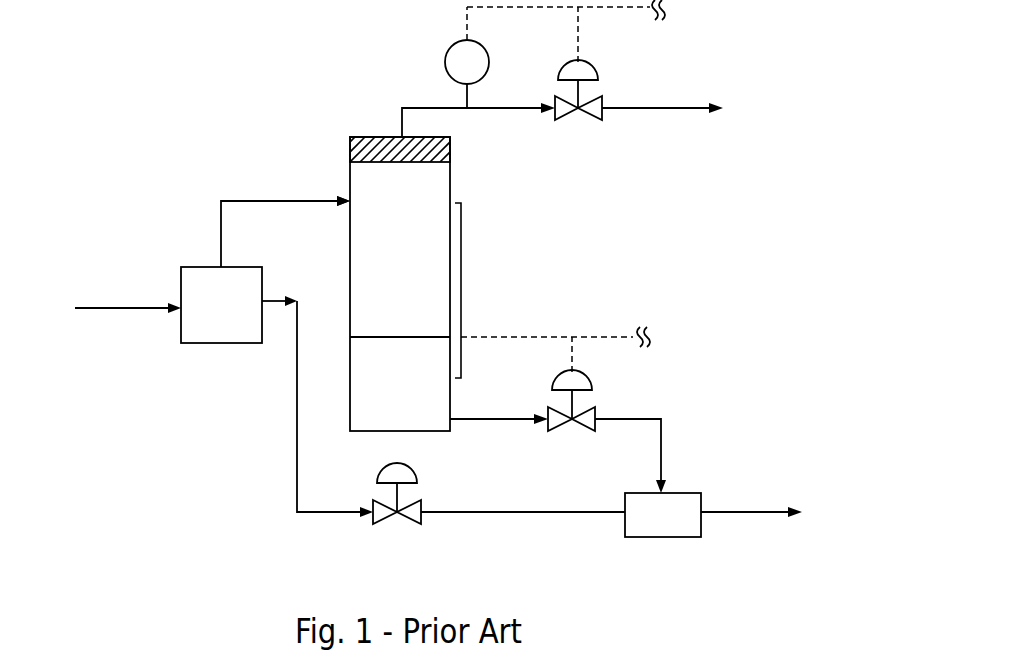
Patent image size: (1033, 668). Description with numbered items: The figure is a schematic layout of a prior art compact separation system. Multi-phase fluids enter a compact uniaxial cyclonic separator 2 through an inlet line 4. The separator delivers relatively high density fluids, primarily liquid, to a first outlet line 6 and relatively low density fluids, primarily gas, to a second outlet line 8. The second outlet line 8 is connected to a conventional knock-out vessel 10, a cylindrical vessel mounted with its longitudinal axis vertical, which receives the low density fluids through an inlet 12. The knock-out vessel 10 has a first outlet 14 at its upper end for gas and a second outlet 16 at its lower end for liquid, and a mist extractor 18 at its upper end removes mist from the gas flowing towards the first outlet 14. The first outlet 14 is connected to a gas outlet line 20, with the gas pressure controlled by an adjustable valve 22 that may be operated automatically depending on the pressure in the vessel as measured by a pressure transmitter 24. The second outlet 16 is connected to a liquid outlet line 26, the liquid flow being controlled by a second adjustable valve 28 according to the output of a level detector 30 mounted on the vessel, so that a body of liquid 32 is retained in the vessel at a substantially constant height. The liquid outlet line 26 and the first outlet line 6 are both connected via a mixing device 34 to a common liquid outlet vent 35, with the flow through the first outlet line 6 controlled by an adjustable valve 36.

The compact uniaxial cyclonic separator 2 is at (198, 262).
The inlet line 4 is at (92, 302).
The first outlet line 6 is at (292, 390).
The second outlet line 8 is at (240, 195).
The knock-out vessel 10 is at (350, 255).
The inlet 12 is at (328, 198).
The first outlet 14 is at (398, 122).
The second outlet 16 is at (508, 422).
The mist extractor 18 is at (450, 150).
The gas outlet line 20 is at (680, 109).
The adjustable valve 22 is at (603, 78).
The pressure transmitter 24 is at (445, 43).
The liquid outlet line 26 is at (667, 443).
The second adjustable valve 28 is at (597, 389).
The level detector 30 is at (462, 307).
The body of liquid 32 is at (413, 412).
The mixing device 34 is at (660, 542).
The common liquid outlet vent 35 is at (753, 506).
The adjustable valve 36 is at (397, 517).